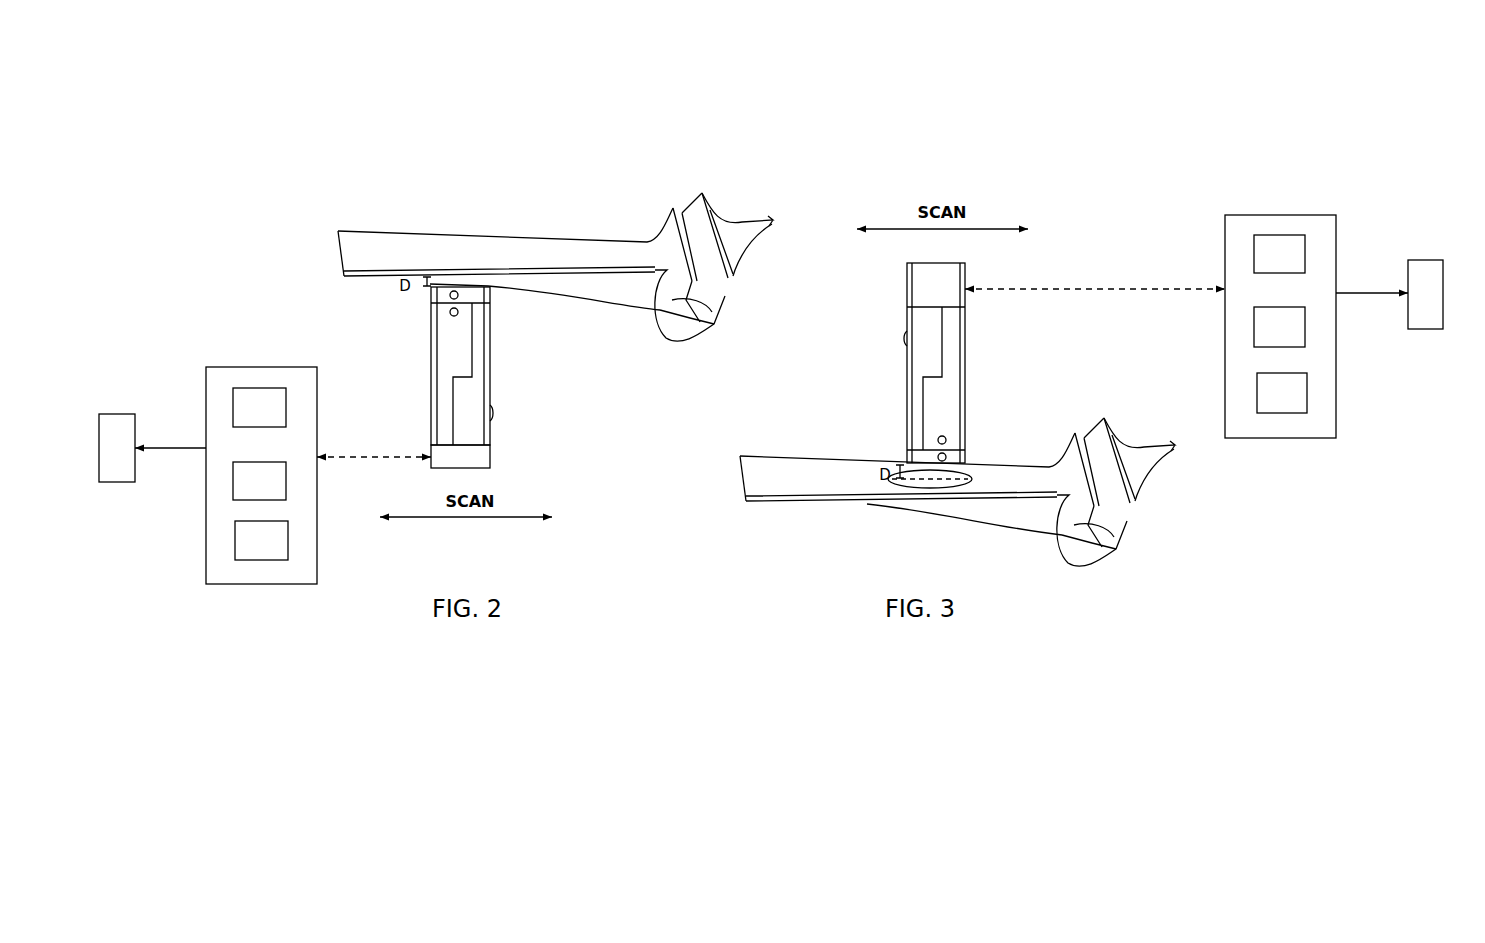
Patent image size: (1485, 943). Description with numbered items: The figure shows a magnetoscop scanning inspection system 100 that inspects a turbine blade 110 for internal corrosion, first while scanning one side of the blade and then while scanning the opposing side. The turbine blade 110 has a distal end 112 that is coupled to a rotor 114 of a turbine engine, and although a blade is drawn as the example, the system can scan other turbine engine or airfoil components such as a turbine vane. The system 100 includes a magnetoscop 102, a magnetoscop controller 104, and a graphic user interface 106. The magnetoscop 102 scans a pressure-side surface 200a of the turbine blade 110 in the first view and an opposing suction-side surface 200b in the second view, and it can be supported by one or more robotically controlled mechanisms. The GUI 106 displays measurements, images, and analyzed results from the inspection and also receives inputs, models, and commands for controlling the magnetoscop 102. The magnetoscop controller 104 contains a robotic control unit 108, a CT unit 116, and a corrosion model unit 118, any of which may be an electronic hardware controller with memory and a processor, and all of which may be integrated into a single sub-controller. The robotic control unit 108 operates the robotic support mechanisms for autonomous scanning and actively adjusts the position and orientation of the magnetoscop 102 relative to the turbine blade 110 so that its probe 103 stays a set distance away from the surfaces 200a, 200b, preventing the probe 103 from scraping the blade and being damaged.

In FIG. 2, the magnetoscop scanning inspection system 100 is at (202, 153).
In FIG. 3, the magnetoscop scanning inspection system 100 is at (1160, 114).
In FIG. 2, the magnetoscop 102 is at (494, 388).
In FIG. 3, the magnetoscop 102 is at (968, 352).
In FIG. 2, the probe 103 is at (480, 293).
In FIG. 3, the probe 103 is at (906, 450).
In FIG. 2, the magnetoscop controller 104 is at (219, 359).
In FIG. 3, the magnetoscop controller 104 is at (1237, 206).
In FIG. 2, the graphic user interface 106 is at (117, 412).
In FIG. 3, the graphic user interface 106 is at (1427, 258).
In FIG. 2, the robotic control unit 108 is at (259, 407).
In FIG. 3, the robotic control unit 108 is at (1279, 254).
In FIG. 2, the turbine blade 110 is at (330, 238).
In FIG. 3, the turbine blade 110 is at (732, 475).
In FIG. 2, the distal end 112 is at (672, 205).
In FIG. 3, the distal end 112 is at (1077, 430).
In FIG. 2, the rotor 114 is at (697, 222).
In FIG. 3, the rotor 114 is at (1103, 440).
In FIG. 2, the CT unit 116 is at (259, 481).
In FIG. 3, the CT unit 116 is at (1279, 327).
In FIG. 2, the corrosion model unit 118 is at (261, 540).
In FIG. 3, the corrosion model unit 118 is at (1282, 393).
In FIG. 2, the pressure-side surface 200a is at (542, 250).
In FIG. 3, the pressure-side surface 200a is at (793, 505).
In FIG. 3, the suction-side surface 200b is at (812, 475).